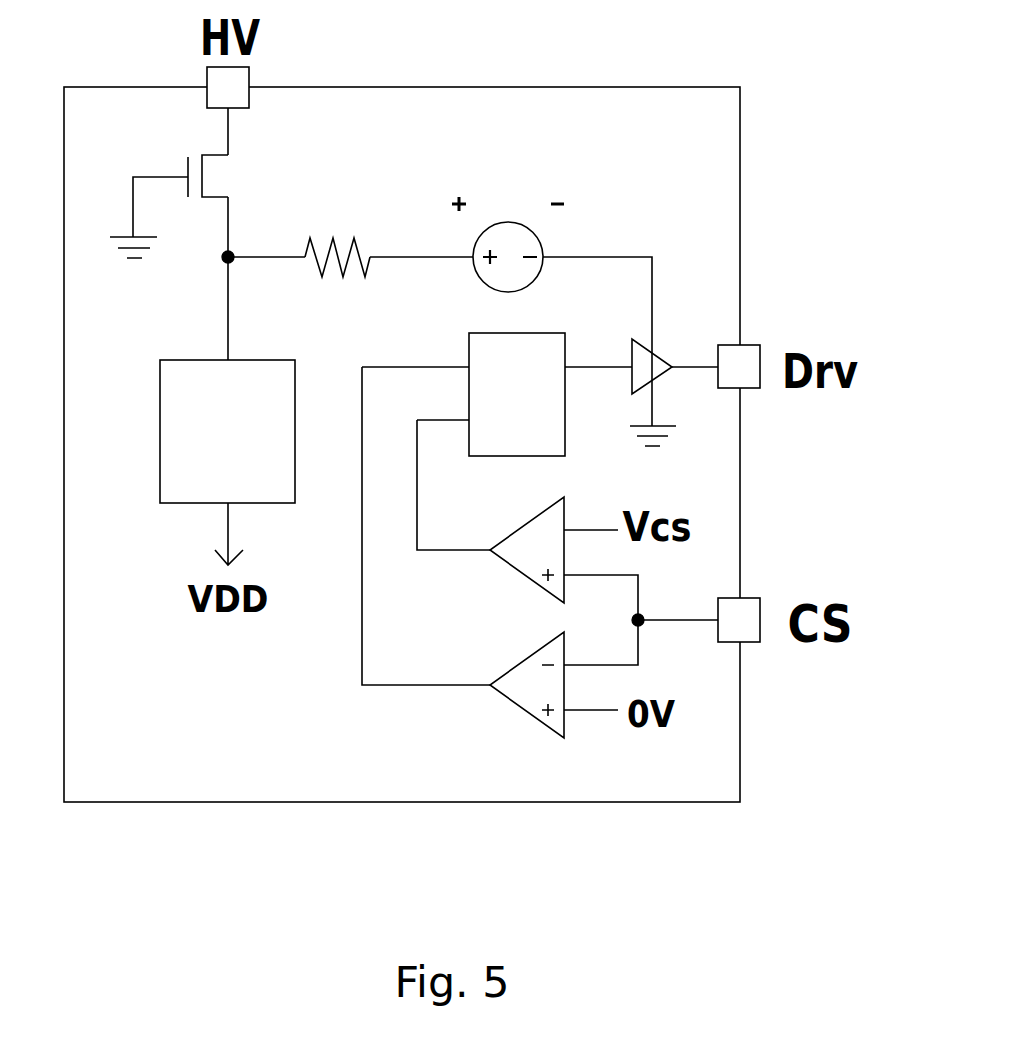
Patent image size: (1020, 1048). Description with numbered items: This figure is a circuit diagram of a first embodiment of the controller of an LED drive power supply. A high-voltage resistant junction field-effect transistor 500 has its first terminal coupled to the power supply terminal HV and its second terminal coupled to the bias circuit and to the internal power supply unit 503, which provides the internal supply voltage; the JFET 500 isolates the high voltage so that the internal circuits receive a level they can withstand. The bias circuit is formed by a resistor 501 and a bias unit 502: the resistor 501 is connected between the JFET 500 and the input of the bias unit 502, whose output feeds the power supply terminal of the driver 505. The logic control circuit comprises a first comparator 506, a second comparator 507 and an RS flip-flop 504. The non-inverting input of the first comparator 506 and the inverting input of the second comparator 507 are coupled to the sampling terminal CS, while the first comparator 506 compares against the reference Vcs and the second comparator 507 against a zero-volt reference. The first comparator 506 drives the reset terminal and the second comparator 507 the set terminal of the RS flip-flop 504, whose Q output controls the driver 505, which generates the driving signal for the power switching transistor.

The junction field-effect transistor 500 is at (232, 190).
The resistor 501 is at (313, 225).
The bias unit 502 is at (570, 225).
The internal power supply unit 503 is at (152, 393).
The RS flip-flop 504 is at (462, 353).
The driver 505 is at (658, 333).
The first comparator 506 is at (512, 573).
The second comparator 507 is at (517, 708).